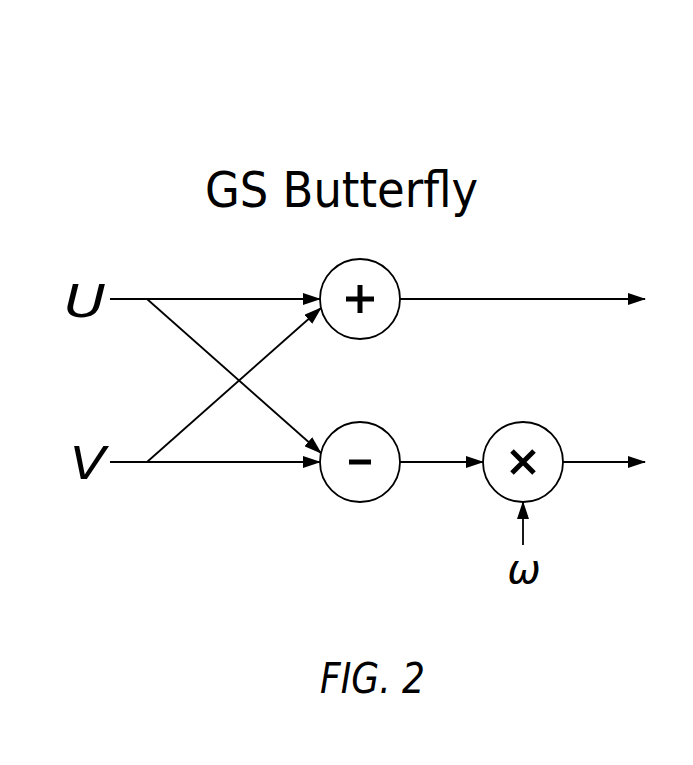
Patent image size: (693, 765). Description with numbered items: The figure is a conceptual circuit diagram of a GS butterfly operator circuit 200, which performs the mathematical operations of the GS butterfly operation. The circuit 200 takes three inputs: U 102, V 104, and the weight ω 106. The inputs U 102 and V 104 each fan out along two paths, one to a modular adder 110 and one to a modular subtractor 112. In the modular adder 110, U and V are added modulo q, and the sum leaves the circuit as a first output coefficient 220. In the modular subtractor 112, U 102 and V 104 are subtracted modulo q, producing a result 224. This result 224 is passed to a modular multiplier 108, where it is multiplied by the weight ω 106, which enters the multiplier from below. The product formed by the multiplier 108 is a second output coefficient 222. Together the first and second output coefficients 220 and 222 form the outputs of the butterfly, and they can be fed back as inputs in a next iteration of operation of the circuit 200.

The GS butterfly operator circuit 200 is at (532, 141).
The input U 102 is at (147, 299).
The input V 104 is at (147, 462).
The modular adder 110 is at (388, 272).
The modular subtractor 112 is at (380, 427).
The result 224 is at (459, 466).
The modular multiplier 108 is at (542, 429).
The weight ω 106 is at (531, 522).
The first output coefficient 220 is at (562, 298).
The second output coefficient 222 is at (580, 462).